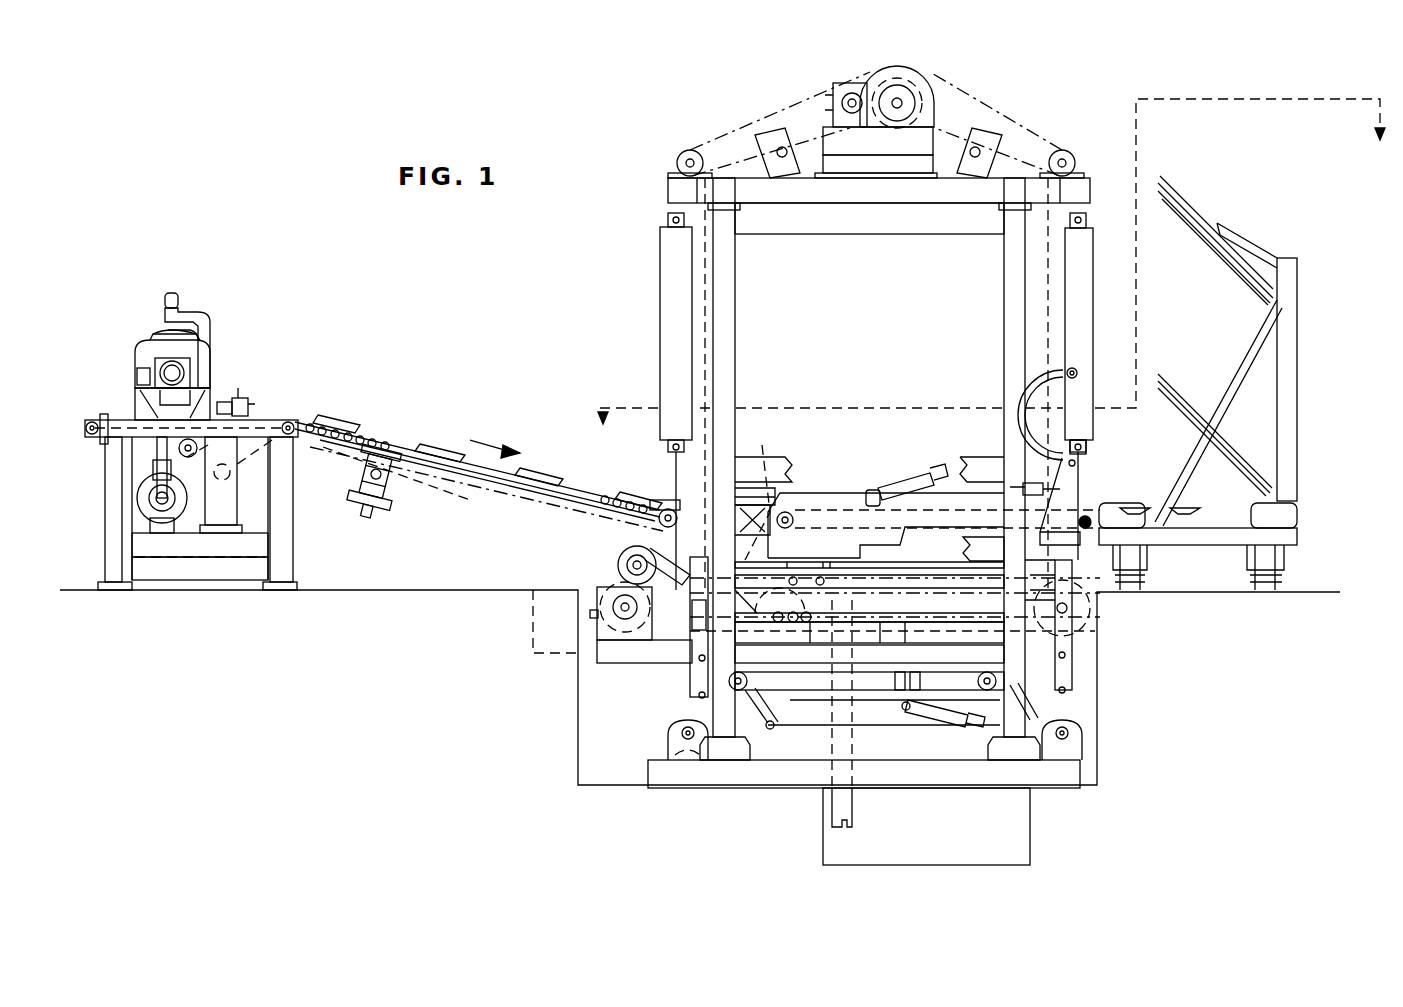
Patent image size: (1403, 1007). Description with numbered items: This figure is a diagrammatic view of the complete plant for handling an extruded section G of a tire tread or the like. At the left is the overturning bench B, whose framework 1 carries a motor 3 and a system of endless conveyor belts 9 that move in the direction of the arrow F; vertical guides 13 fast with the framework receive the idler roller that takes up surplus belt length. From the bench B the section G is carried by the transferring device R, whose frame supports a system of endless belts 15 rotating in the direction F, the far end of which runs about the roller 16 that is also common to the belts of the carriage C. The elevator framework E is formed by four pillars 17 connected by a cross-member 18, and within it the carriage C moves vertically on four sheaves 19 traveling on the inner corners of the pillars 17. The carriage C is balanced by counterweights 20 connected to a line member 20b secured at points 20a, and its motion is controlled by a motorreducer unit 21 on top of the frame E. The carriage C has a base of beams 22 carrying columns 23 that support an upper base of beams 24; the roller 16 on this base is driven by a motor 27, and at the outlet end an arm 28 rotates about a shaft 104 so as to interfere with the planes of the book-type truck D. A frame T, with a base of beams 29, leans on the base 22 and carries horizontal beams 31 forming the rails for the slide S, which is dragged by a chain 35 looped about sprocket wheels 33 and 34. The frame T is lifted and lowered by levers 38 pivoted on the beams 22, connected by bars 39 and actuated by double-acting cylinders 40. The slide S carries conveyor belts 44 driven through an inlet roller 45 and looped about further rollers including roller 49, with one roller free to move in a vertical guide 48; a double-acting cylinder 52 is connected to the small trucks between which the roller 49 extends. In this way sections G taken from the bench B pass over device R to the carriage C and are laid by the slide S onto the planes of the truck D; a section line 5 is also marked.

The framework 1 is at (110, 485).
The motor 3 is at (140, 500).
The section line 5- 5 is at (993, 276).
The conveyor belts 9 is at (268, 420).
The vertical guides 13 is at (237, 493).
The endless belts 15 is at (590, 480).
The roller 16 is at (665, 508).
The pillars 17 is at (735, 341).
The cross-member 18 is at (935, 234).
The sheaves 19 is at (752, 683).
The counterweights 20 is at (660, 268).
The points 20a is at (692, 690).
The line member 20b is at (668, 209).
The motorreducer unit 21 is at (905, 80).
The beams 22 is at (840, 685).
The columns 23 is at (690, 670).
The beams 24 is at (963, 549).
The motor 27 is at (648, 552).
The arm 28 is at (1030, 397).
The beams 29 is at (957, 653).
The horizontal beams 31 is at (962, 608).
The sprocket wheel 33 is at (615, 590).
The sprocket wheel 34 is at (1090, 618).
The chain 35 is at (855, 580).
The levers 38 is at (700, 720).
The bars 39 is at (822, 740).
The double-acting cylinders 40 is at (945, 715).
The conveyor belts 44 is at (840, 520).
The inlet roller 45 is at (762, 492).
The vertical guide 48 is at (852, 803).
The roller 49 is at (1088, 515).
The double-acting cylinder 52 is at (905, 485).
The shaft 104 is at (1082, 470).
The bench B is at (228, 328).
The carriage C is at (810, 735).
The book-type truck D is at (1208, 196).
The framework E is at (745, 292).
The arrow F is at (495, 445).
The section G is at (165, 340).
The device R is at (446, 490).
The slide S is at (850, 480).
The frame T is at (598, 660).